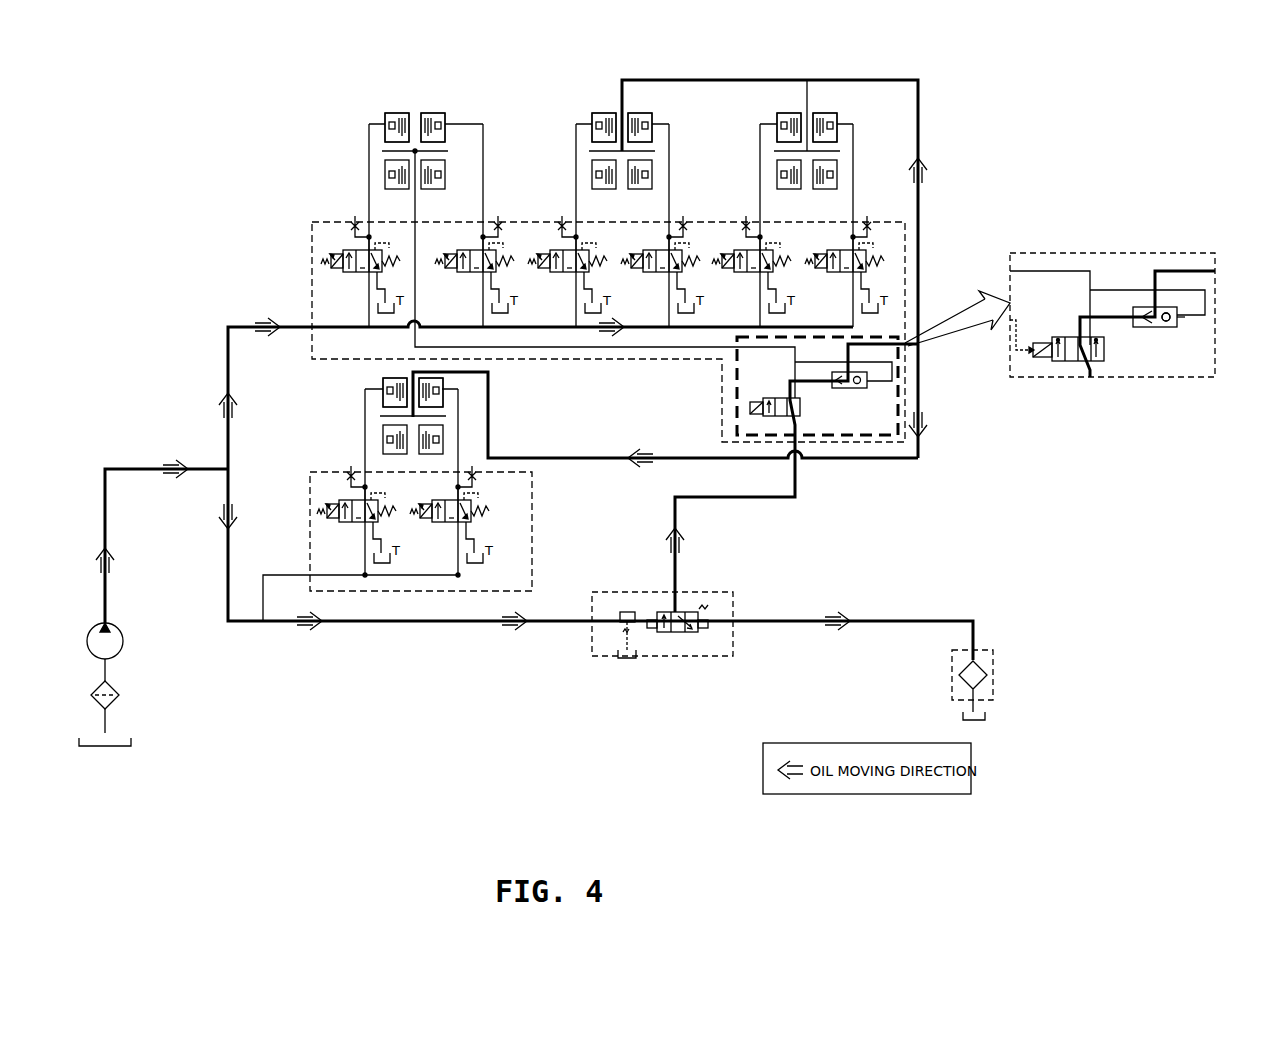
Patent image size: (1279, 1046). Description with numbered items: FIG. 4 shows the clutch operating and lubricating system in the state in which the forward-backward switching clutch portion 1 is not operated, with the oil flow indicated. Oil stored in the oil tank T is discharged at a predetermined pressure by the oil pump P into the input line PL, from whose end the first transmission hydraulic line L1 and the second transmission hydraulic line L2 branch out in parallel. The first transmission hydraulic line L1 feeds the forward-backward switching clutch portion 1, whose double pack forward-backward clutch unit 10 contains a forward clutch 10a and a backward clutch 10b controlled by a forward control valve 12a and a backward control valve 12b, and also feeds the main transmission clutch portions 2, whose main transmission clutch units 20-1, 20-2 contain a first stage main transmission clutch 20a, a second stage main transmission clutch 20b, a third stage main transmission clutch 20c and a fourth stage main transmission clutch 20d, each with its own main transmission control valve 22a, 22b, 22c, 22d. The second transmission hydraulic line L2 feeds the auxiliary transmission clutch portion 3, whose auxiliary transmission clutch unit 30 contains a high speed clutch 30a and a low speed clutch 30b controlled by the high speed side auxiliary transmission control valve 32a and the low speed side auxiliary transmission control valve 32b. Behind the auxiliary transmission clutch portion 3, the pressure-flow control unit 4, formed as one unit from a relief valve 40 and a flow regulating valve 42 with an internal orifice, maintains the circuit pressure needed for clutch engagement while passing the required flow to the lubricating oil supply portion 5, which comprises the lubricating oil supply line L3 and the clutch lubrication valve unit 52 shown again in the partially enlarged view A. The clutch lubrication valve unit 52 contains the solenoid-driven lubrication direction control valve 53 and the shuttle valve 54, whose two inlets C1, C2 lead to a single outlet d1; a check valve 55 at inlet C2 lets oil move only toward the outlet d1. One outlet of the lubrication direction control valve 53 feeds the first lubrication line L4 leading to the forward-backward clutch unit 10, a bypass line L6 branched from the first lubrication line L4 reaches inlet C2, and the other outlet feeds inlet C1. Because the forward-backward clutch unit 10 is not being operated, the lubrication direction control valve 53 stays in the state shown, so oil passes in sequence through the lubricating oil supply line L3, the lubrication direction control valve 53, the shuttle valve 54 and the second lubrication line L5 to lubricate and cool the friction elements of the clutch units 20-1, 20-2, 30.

The forward-backward switching clutch portion 1 is at (497, 182).
The main transmission clutch portion 2 is at (683, 178).
The auxiliary transmission clutch portion 3 is at (352, 449).
The pressure-flow control unit 4 is at (705, 722).
The lubricating oil supply portion 5 is at (976, 448).
The forward-backward clutch unit 10 is at (465, 50).
The forward clutch 10a is at (408, 112).
The backward clutch 10b is at (444, 112).
The forward control valve 12a is at (362, 274).
The backward control valve 12b is at (476, 274).
The main transmission clutch unit 20-1 is at (668, 50).
The main transmission clutch unit 20-2 is at (858, 50).
The first stage main transmission clutch 20a is at (614, 112).
The second stage main transmission clutch 20b is at (650, 112).
The third stage main transmission clutch 20c is at (800, 112).
The fourth stage main transmission clutch 20d is at (836, 112).
The first stage main transmission control valve 22a is at (569, 274).
The second stage main transmission control valve 22b is at (662, 274).
The third stage main transmission control valve 22c is at (753, 274).
The fourth stage main transmission control valve 22d is at (846, 274).
The auxiliary transmission clutch unit 30 is at (543, 383).
The high speed clutch 30a is at (400, 455).
The low speed clutch 30b is at (425, 455).
The high speed side auxiliary transmission control valve 32a is at (358, 524).
The low speed side auxiliary transmission control valve 32b is at (451, 524).
The relief valve 40 is at (628, 636).
The flow regulating valve 42 is at (683, 636).
The clutch lubrication valve unit 52 is at (898, 402).
The lubrication direction control valve 53 is at (810, 418).
The shuttle valve 54 is at (885, 434).
The check valve 55 is at (1176, 320).
The inlet C1 is at (1128, 328).
The inlet C2 is at (1180, 315).
The outlet d1 is at (1153, 296).
The first transmission hydraulic line L1 is at (228, 357).
The second transmission hydraulic line L2 is at (228, 549).
The lubricating oil supply line L3 is at (790, 505).
The first lubrication line L4 is at (648, 349).
The second lubrication line L5 is at (905, 343).
The bypass line L6 is at (797, 362).
The input line PL is at (146, 469).
The oil pump P is at (123, 645).
The oil tank T is at (120, 749).
The detail portion A is at (905, 352).